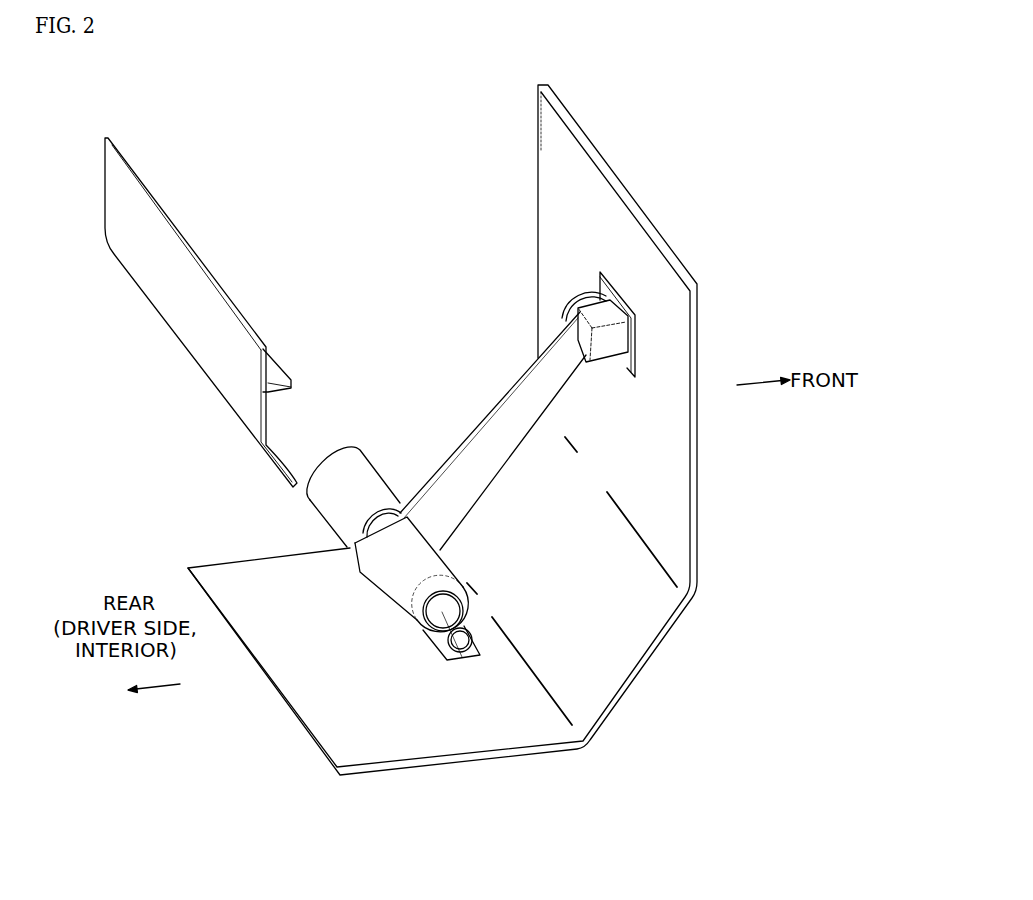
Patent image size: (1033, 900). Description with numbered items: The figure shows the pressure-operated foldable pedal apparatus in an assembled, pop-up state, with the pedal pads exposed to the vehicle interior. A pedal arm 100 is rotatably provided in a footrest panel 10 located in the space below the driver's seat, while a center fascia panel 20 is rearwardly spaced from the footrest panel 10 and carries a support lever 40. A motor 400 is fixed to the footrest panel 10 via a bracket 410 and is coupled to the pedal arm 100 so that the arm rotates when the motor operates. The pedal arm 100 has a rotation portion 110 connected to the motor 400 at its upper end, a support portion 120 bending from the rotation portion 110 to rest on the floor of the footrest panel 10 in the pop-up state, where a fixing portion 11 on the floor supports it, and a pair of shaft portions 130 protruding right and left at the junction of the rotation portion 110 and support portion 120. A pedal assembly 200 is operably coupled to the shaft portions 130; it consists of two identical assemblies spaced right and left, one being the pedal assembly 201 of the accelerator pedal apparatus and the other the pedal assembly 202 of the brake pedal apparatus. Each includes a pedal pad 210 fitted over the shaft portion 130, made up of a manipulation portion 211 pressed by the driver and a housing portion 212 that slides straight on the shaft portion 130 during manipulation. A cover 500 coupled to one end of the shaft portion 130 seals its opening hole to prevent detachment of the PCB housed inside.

The footrest panel 10 is at (672, 343).
The fixing portion 11 is at (443, 612).
The center fascia panel 20 is at (161, 296).
The support lever 40 is at (273, 367).
The pedal arm 100 is at (595, 420).
The rotation portion 110 is at (493, 458).
The support portion 120 is at (462, 652).
The shaft portion 130 is at (380, 523).
The pedal assembly 200 is at (465, 598).
The pedal assembly of an accelerator pedal apparatus 201 is at (415, 632).
The pedal assembly of a brake pedal apparatus 202 is at (360, 447).
The pedal pad 210 is at (386, 612).
The manipulation portion 211 is at (343, 508).
The housing portion 212 is at (460, 575).
The motor 400 is at (605, 317).
The bracket 410 is at (612, 297).
The cover 500 is at (478, 622).